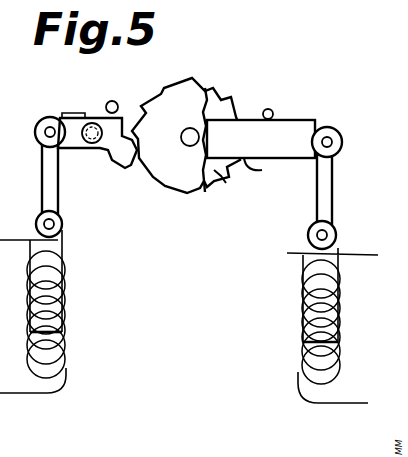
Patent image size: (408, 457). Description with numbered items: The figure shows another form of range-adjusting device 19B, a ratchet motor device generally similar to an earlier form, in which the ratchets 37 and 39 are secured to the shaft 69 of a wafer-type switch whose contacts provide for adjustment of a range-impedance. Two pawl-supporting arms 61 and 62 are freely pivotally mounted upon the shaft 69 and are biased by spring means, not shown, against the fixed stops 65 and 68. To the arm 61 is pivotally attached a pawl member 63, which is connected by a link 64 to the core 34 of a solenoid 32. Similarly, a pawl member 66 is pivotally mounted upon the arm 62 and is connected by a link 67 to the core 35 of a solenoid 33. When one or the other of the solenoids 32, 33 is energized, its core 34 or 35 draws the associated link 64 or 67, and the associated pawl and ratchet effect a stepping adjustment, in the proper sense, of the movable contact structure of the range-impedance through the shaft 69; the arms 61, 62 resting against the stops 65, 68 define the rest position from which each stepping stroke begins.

The range-adjusting device 19B is at (235, 307).
The solenoid 32 is at (71, 358).
The solenoid 33 is at (339, 343).
The core 34 is at (58, 241).
The core 35 is at (320, 291).
The ratchet 37 is at (205, 192).
The ratchet 39 is at (222, 178).
The pawl-supporting arm 61 is at (70, 112).
The pawl-supporting arm 62 is at (299, 121).
The pawl member 63 is at (83, 148).
The link 64 is at (55, 192).
The fixed stop 65 is at (113, 101).
The pawl member 66 is at (335, 132).
The link 67 is at (335, 196).
The fixed stop 68 is at (268, 109).
The shaft 69 is at (191, 128).